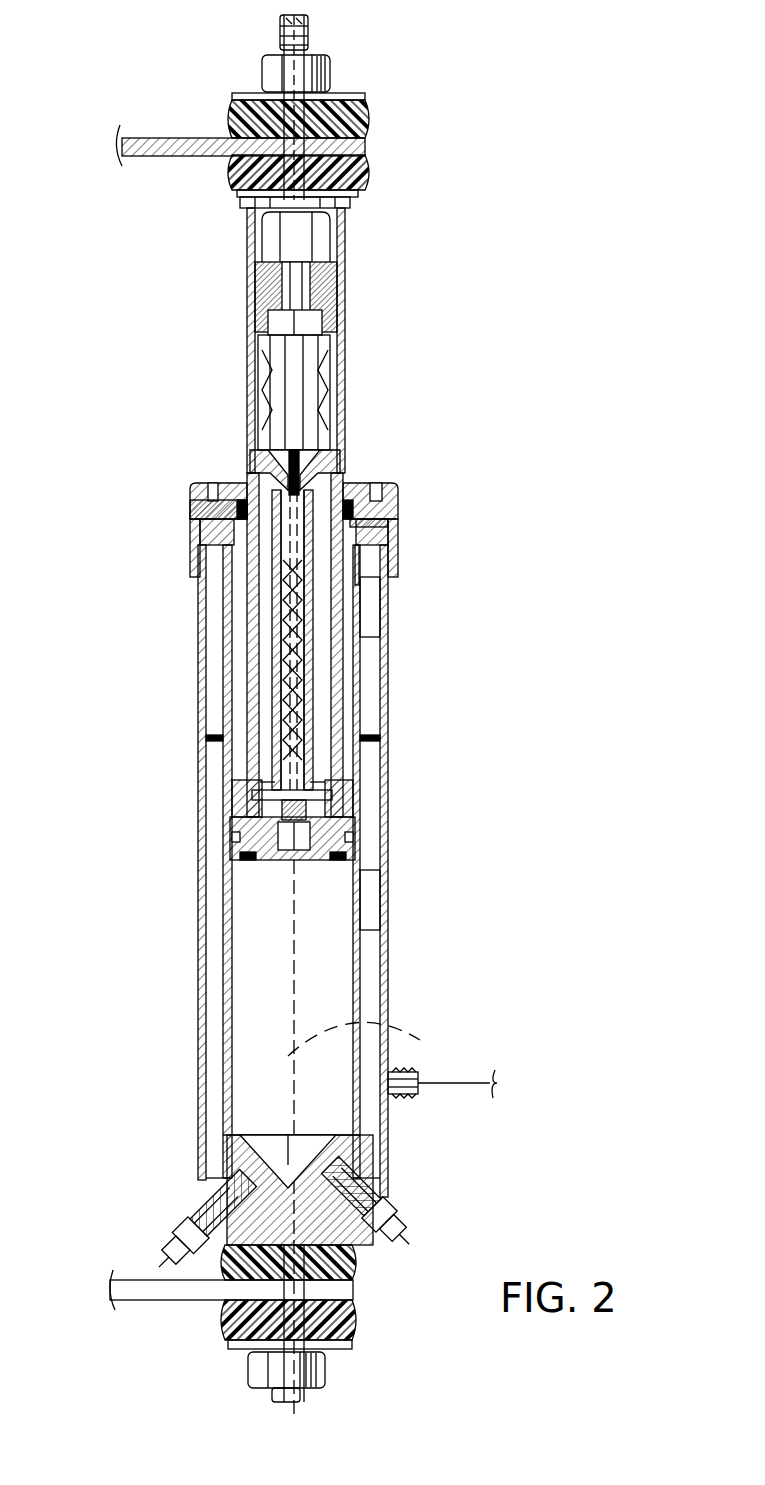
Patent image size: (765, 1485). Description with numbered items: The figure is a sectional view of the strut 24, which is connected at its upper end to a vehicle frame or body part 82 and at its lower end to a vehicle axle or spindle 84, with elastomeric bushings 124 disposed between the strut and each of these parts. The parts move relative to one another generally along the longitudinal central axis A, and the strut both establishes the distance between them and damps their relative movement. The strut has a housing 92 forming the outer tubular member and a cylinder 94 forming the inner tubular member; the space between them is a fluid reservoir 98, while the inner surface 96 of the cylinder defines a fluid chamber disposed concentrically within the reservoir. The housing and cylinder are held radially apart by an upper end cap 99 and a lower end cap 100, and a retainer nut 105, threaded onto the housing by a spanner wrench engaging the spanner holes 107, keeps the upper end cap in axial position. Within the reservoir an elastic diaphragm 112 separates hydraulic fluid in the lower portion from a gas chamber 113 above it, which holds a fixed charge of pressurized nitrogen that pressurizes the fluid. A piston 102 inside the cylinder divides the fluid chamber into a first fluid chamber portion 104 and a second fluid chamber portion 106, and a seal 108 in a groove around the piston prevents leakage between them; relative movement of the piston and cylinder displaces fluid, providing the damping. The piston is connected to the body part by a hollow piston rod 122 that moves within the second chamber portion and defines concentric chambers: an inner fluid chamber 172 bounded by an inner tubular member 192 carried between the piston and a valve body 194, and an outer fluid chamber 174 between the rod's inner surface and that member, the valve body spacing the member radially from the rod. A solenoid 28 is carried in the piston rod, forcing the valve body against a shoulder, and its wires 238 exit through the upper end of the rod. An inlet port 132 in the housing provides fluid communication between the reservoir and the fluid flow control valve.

The strut 24 is at (450, 498).
The solenoid 28 is at (265, 352).
The vehicle frame or body part 82 is at (181, 140).
The vehicle axle or spindle 84 is at (148, 1295).
The housing 92 is at (388, 758).
The cylinder 94 is at (355, 812).
The inner surface of the cylinder 96 is at (353, 903).
The fluid reservoir 98 is at (368, 866).
The upper end cap 99 is at (380, 527).
The lower end cap 100 is at (330, 1230).
The piston 102 is at (232, 853).
The first fluid chamber portion 104 is at (340, 973).
The retainer nut 105 is at (200, 500).
The second fluid chamber portion 106 is at (370, 665).
The spanner holes 107 is at (373, 492).
The seal 108 is at (230, 829).
The elastic diaphragm 112 is at (374, 738).
The gas chamber 113 is at (378, 626).
The piston rod 122 is at (350, 358).
The elastomeric bushings 124 is at (360, 118).
The inlet port 132 is at (405, 1093).
The inner fluid chamber 172 is at (290, 696).
The outer fluid chamber 174 is at (262, 622).
The inner tubular member 192 is at (262, 760).
The valve body 194 is at (256, 462).
The wires 238 is at (292, 12).
The longitudinal central axis A is at (363, 1039).